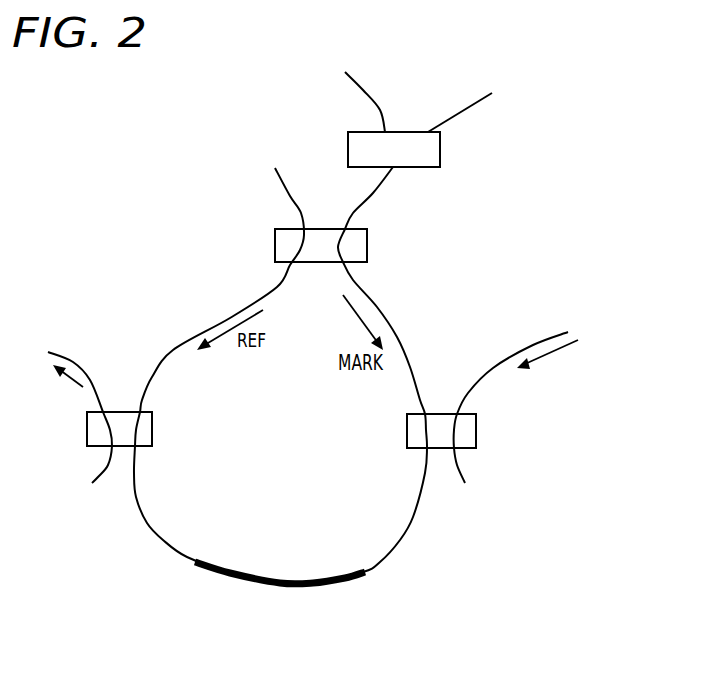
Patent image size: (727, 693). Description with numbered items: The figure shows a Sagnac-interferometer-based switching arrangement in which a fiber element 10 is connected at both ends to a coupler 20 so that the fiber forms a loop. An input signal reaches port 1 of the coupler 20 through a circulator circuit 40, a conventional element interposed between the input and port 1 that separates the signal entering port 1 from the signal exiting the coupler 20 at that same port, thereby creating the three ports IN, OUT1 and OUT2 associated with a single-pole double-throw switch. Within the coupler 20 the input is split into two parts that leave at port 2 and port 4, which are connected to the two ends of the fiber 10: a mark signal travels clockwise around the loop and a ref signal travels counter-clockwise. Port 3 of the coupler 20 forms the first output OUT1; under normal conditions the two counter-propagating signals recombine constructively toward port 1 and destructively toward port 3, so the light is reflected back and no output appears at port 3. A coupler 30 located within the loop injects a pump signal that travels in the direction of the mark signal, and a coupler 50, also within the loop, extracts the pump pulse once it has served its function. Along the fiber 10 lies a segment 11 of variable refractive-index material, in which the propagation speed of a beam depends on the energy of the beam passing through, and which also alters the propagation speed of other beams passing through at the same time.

The fiber element 10 is at (142, 510).
The segment 11 is at (300, 584).
The coupler 20 is at (367, 247).
The coupler 30 is at (476, 432).
The circulator circuit 40 is at (440, 155).
The coupler 50 is at (87, 424).
The port 1 is at (362, 216).
The port 2 is at (361, 275).
The port 3 is at (281, 216).
The port 4 is at (280, 275).